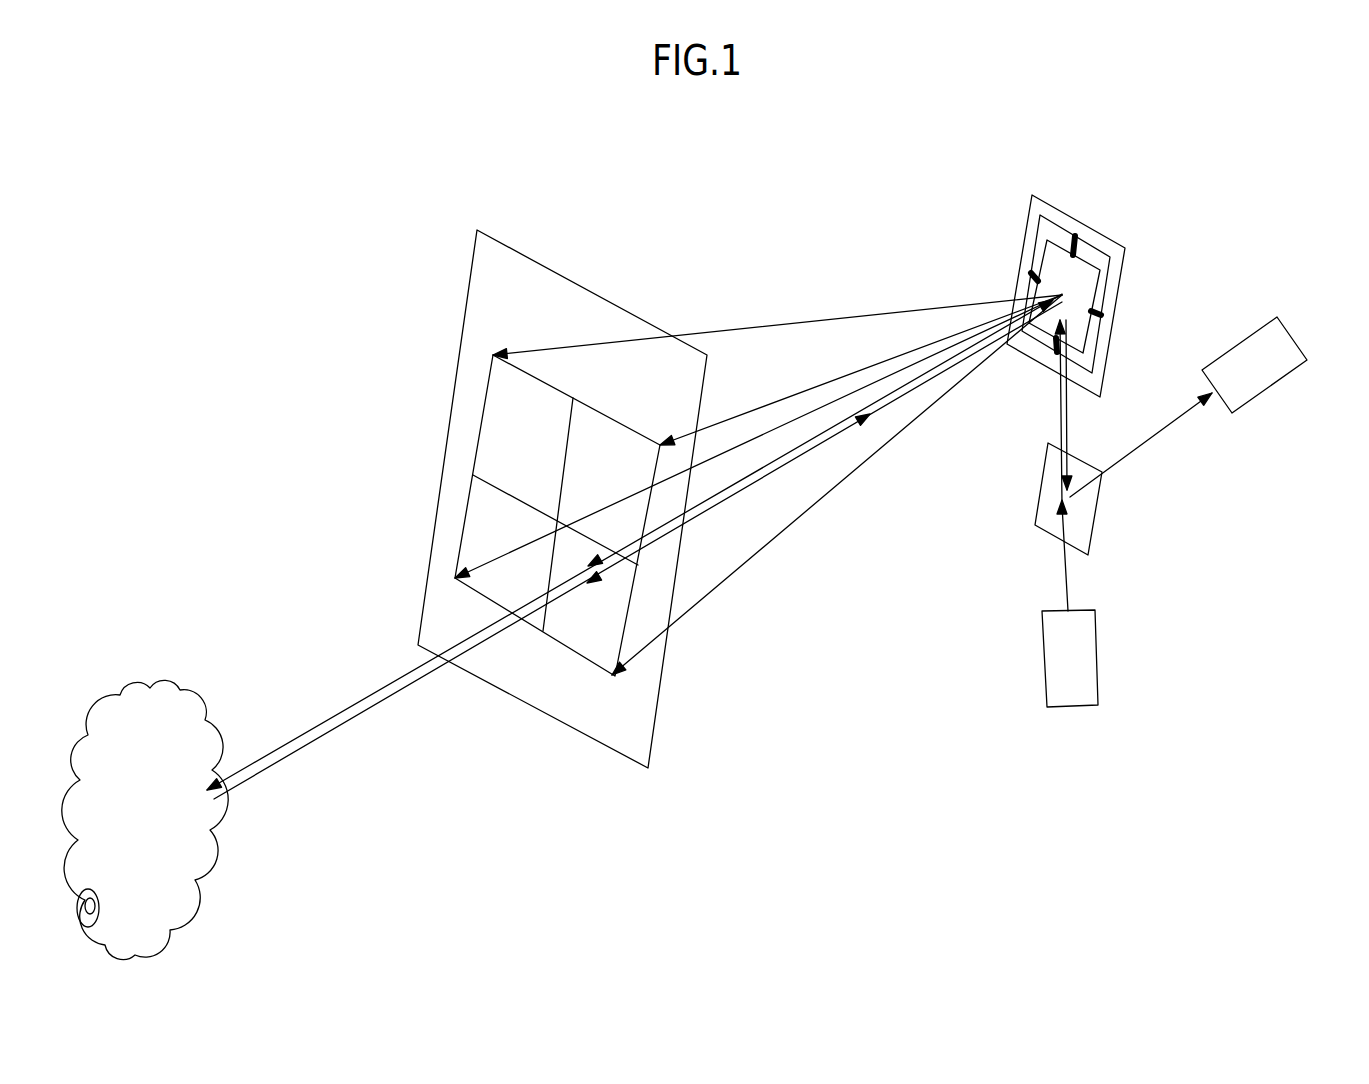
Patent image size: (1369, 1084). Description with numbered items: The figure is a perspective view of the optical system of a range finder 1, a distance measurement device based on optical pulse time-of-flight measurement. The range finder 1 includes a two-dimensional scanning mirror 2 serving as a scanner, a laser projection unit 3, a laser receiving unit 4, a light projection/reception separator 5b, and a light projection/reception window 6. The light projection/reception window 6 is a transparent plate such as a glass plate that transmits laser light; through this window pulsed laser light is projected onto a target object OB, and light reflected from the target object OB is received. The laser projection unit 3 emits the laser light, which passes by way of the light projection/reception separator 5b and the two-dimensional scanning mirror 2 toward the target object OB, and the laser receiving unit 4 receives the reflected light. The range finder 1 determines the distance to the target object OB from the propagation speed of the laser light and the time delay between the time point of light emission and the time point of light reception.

The range finder 1 is at (800, 212).
The two-dimensional scanning mirror 2 is at (1085, 232).
The laser projection unit 3 is at (1090, 677).
The laser receiving unit 4 is at (1275, 340).
The light projection/reception separator 5b is at (1083, 515).
The light projection/reception window 6 is at (490, 433).
The target object OB is at (160, 677).